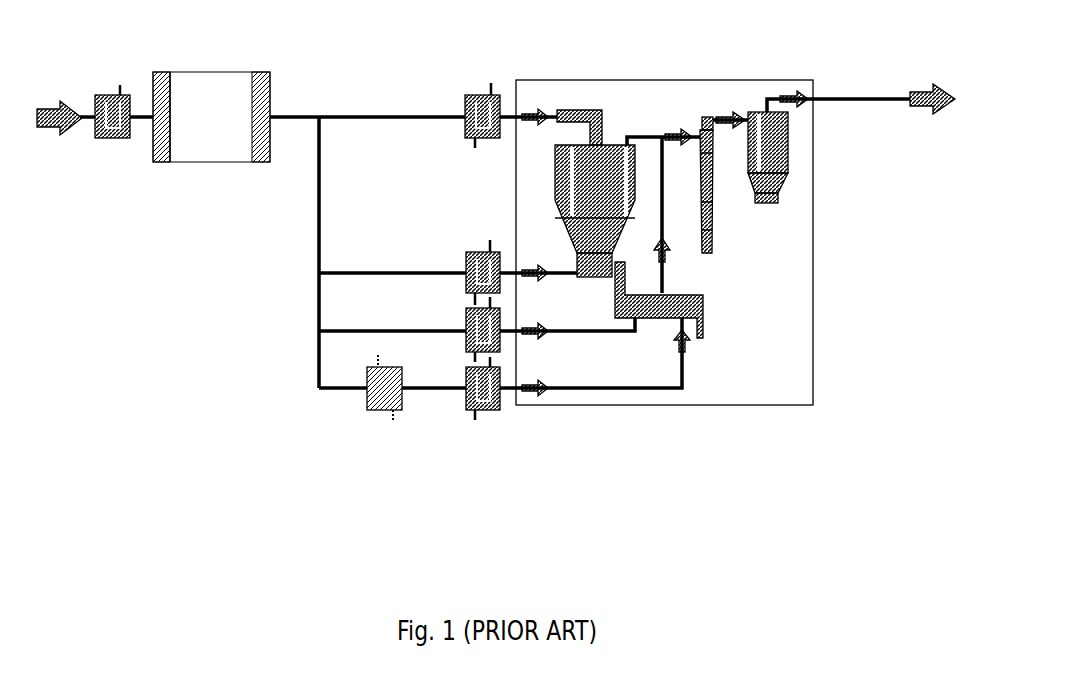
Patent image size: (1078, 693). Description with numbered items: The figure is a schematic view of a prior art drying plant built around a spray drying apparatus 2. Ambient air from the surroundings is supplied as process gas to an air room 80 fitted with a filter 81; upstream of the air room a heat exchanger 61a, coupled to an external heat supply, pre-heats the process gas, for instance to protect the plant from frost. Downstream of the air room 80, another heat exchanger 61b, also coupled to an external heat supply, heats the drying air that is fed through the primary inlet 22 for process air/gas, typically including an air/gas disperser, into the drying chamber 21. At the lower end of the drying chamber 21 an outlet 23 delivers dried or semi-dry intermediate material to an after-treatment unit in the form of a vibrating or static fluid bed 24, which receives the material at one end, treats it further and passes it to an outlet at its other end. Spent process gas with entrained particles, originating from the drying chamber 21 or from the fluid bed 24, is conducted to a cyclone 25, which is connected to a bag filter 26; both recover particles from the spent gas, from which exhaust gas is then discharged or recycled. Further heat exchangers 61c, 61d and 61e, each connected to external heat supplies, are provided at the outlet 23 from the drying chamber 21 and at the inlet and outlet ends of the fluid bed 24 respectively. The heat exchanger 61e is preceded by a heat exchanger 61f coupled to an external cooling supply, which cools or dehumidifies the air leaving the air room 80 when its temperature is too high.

The spray drying apparatus 2 is at (796, 70).
The drying chamber 21 is at (570, 176).
The primary inlet 22 is at (573, 110).
The outlet 23 is at (587, 262).
The vibrating or static fluid bed 24 is at (662, 300).
The cyclone 25 is at (712, 207).
The bag filter 26 is at (777, 138).
The heat exchanger 61a is at (110, 127).
The heat exchanger 61b is at (480, 102).
The heat exchanger 61c is at (467, 255).
The heat exchanger 61d is at (465, 327).
The heat exchanger 61e is at (477, 412).
The heat exchanger 61f is at (368, 402).
The air room 80 is at (216, 138).
The filter 81 is at (165, 150).